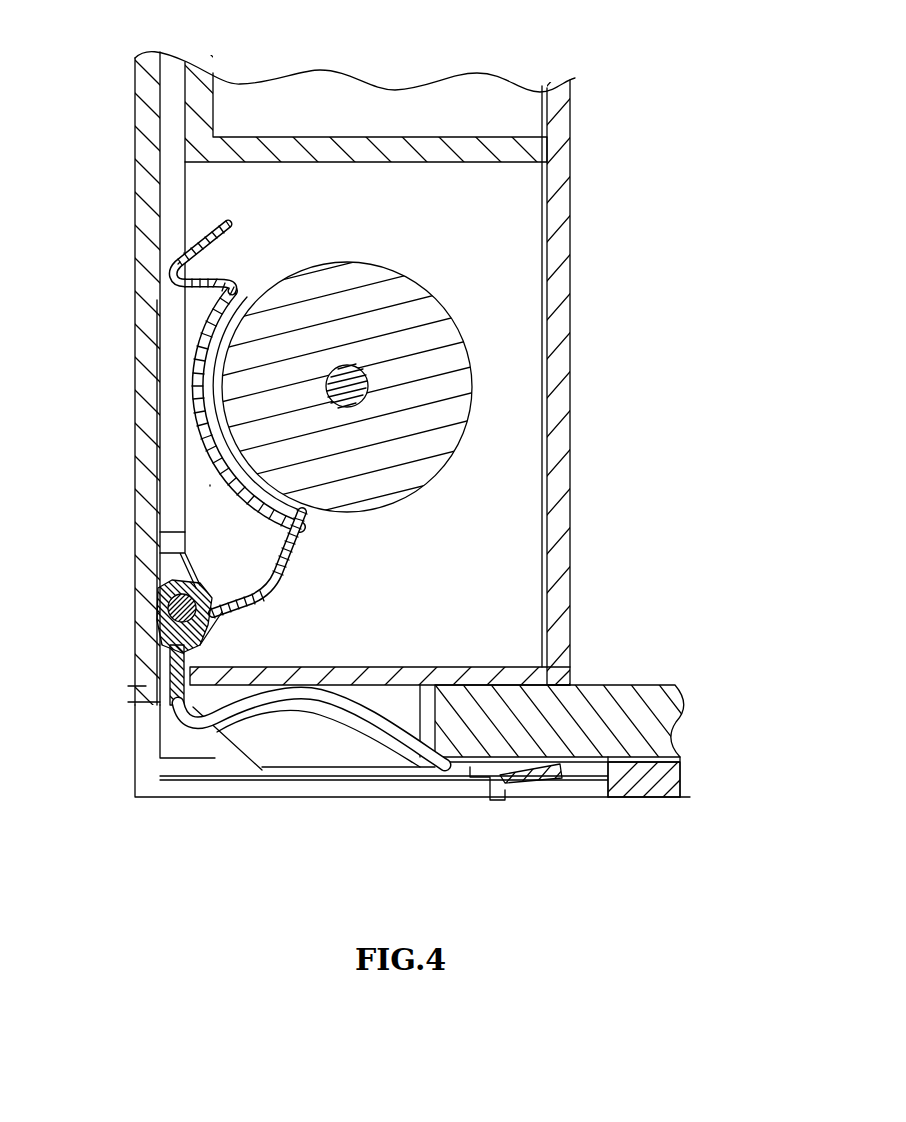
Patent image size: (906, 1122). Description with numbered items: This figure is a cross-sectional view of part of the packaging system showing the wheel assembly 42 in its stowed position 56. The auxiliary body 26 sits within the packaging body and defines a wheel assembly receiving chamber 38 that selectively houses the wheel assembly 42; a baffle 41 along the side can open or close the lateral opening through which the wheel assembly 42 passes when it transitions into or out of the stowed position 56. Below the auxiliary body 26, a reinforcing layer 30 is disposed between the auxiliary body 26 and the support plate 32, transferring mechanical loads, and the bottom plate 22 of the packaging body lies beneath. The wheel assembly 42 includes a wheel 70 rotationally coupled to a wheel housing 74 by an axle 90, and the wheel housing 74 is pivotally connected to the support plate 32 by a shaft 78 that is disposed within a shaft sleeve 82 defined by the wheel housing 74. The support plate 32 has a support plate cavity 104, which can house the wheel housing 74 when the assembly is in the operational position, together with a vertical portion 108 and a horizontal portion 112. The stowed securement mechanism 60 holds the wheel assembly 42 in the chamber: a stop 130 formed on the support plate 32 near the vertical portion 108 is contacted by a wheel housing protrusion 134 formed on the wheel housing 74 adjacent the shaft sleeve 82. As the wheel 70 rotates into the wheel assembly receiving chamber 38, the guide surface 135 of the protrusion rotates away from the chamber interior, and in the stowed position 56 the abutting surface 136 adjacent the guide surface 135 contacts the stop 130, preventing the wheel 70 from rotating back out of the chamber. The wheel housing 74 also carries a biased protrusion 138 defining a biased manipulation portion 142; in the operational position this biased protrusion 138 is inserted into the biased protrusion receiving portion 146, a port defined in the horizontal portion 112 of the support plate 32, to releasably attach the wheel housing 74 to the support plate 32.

The bottom plate 22 is at (683, 768).
The auxiliary body 26 is at (437, 148).
The reinforcing layer 30 is at (660, 725).
The support plate 32 is at (246, 768).
The wheel assembly receiving chamber 38 is at (517, 200).
The baffle 41 is at (150, 295).
The wheel assembly 42 is at (208, 488).
The stowed position 56 is at (555, 500).
The stowed securement mechanism 60 is at (300, 584).
The wheel 70 is at (440, 333).
The wheel housing 74 is at (190, 390).
The shaft 78 is at (168, 590).
The shaft sleeve 82 is at (160, 622).
The axle 90 is at (352, 378).
The support plate cavity 104 is at (330, 725).
The vertical portion 108 is at (166, 706).
The horizontal portion 112 is at (555, 773).
The stop 130 is at (188, 670).
The wheel housing protrusion 134 is at (128, 698).
The guide surface 135 is at (172, 650).
The abutting surface 136 is at (198, 648).
The biased protrusion 138 is at (213, 216).
The biased manipulation portion 142 is at (235, 226).
The biased protrusion receiving portion 146 is at (483, 780).